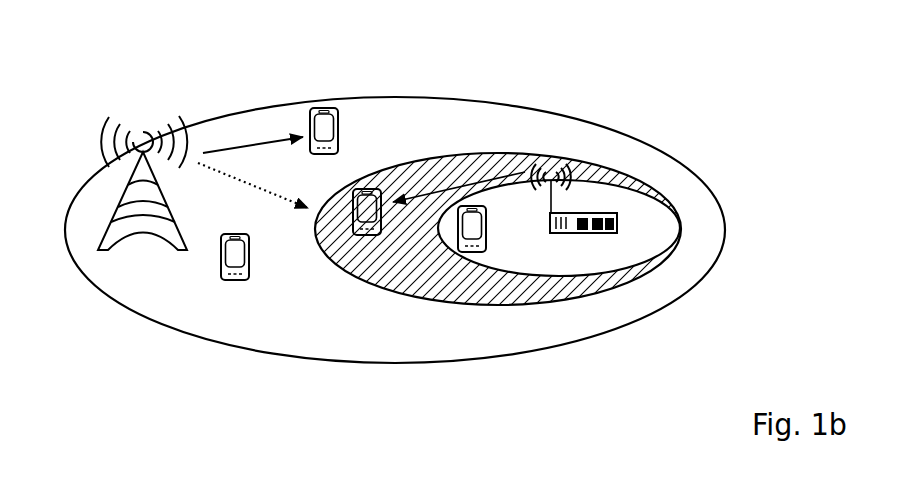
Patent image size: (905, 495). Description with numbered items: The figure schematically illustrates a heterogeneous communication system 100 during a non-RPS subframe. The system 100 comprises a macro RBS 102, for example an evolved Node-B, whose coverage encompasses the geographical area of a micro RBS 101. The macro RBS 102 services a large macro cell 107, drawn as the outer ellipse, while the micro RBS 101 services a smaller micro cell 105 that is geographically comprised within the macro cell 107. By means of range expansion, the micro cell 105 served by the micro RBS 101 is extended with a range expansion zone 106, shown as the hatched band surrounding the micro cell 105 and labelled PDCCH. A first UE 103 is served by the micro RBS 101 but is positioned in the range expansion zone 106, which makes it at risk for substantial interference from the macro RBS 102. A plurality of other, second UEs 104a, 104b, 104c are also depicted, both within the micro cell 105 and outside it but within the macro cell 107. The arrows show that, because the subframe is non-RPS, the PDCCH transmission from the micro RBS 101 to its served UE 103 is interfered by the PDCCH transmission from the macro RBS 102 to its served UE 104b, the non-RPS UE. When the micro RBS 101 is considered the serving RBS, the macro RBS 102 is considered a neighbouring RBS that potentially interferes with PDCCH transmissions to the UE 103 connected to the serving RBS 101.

The heterogeneous communication system 100 is at (706, 105).
The micro RBS 101 is at (613, 213).
The macro RBS 102 is at (106, 230).
The first UE 103 is at (381, 218).
The second UE 104a is at (486, 230).
The second UE served by the macro RBS 104b is at (340, 131).
The second UE 104c is at (251, 272).
The micro cell 105 is at (648, 240).
The range expansion zone 106 is at (490, 158).
The macro cell 107 is at (168, 298).